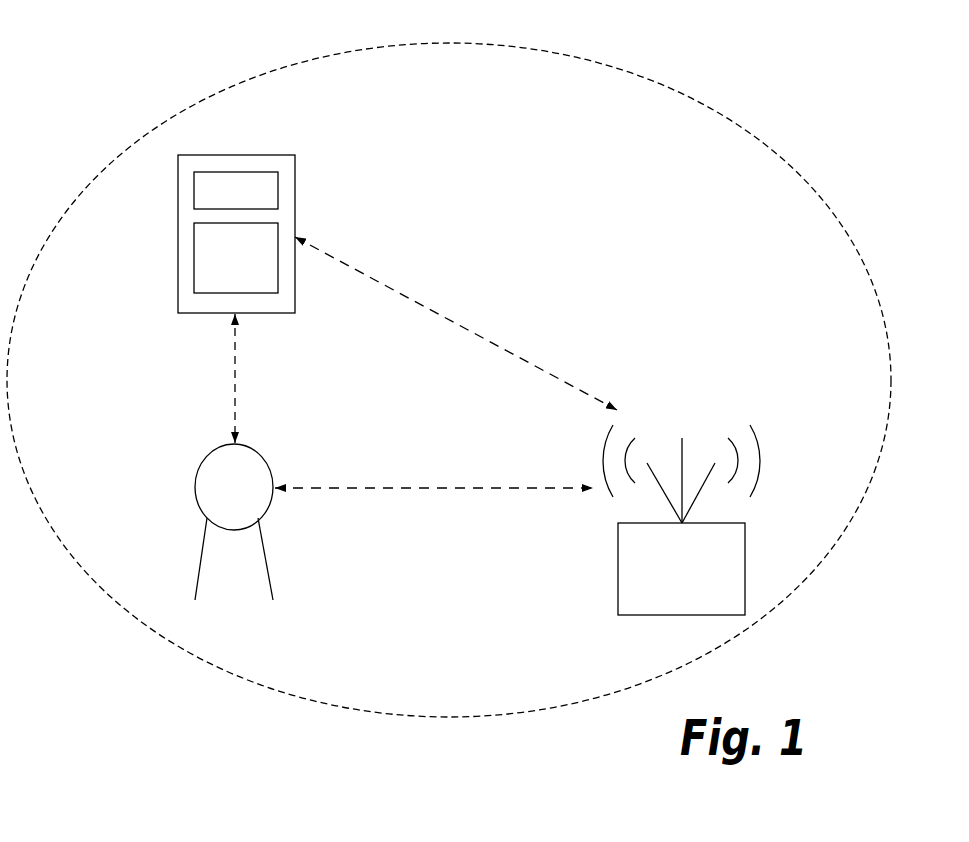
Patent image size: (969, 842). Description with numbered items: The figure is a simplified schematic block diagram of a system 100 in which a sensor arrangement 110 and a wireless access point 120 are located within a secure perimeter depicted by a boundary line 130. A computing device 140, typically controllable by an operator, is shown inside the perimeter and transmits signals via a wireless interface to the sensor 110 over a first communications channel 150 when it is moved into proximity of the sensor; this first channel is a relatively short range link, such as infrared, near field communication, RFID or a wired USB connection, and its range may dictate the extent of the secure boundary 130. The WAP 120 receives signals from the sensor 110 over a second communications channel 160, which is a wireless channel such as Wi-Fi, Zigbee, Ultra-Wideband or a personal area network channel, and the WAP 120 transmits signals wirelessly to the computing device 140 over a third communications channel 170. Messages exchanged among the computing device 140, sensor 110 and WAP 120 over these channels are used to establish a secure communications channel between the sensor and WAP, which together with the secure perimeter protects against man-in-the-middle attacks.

The system 100 is at (83, 78).
The sensor arrangement 110 is at (197, 485).
The wireless access point 120 is at (618, 568).
The boundary line 130 is at (627, 70).
The computing device 140 is at (177, 235).
The first communications channel 150 is at (227, 379).
The second communications channel 160 is at (433, 487).
The third communications channel 170 is at (468, 330).